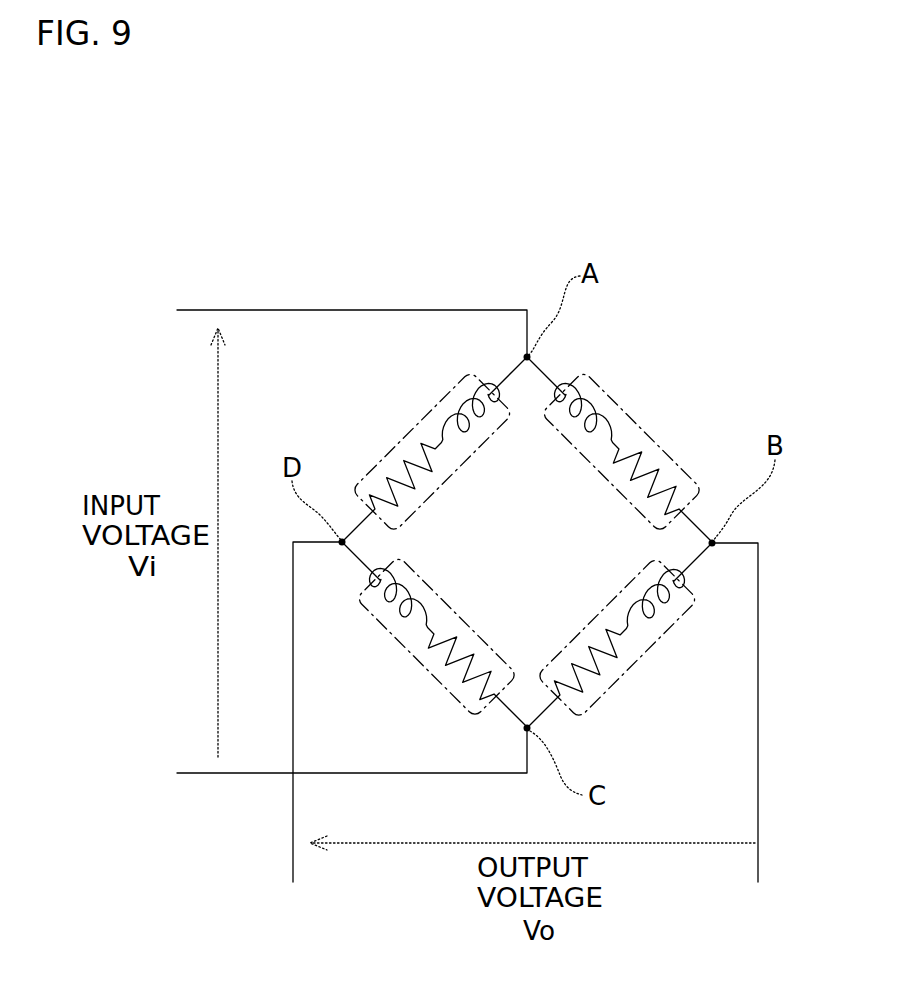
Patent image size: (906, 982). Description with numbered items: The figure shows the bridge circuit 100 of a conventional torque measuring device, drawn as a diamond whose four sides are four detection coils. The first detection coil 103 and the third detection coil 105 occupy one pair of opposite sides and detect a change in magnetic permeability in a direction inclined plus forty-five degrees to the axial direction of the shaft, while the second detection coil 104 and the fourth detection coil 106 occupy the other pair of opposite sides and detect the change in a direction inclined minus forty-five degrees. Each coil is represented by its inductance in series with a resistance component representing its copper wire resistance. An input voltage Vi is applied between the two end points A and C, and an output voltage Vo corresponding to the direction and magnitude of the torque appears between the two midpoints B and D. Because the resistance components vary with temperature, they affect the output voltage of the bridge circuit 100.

The bridge circuit 100 is at (635, 280).
The first detection coil 103 is at (410, 432).
The second detection coil 104 is at (648, 410).
The third detection coil 105 is at (641, 655).
The fourth detection coil 106 is at (410, 657).